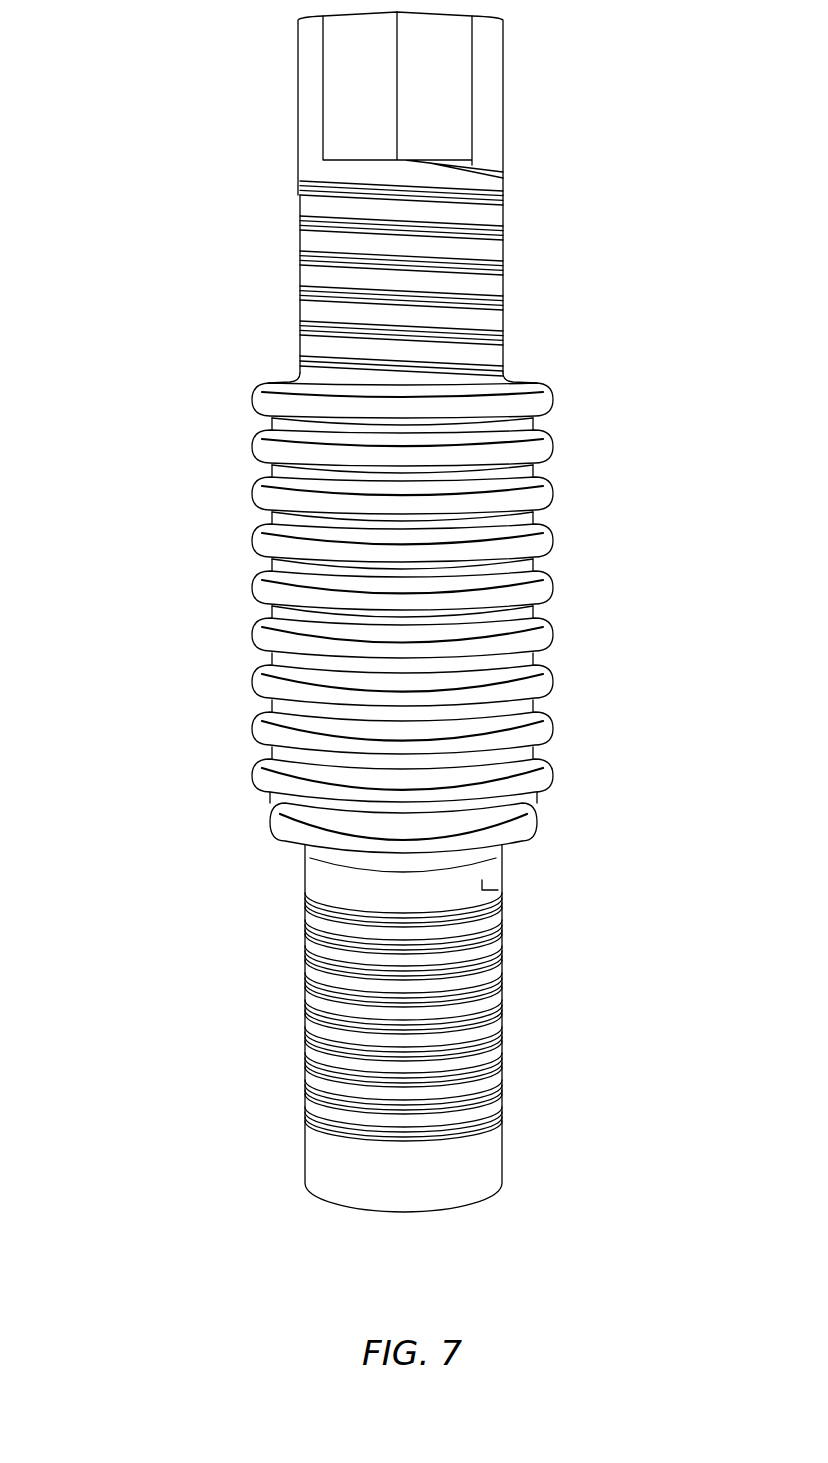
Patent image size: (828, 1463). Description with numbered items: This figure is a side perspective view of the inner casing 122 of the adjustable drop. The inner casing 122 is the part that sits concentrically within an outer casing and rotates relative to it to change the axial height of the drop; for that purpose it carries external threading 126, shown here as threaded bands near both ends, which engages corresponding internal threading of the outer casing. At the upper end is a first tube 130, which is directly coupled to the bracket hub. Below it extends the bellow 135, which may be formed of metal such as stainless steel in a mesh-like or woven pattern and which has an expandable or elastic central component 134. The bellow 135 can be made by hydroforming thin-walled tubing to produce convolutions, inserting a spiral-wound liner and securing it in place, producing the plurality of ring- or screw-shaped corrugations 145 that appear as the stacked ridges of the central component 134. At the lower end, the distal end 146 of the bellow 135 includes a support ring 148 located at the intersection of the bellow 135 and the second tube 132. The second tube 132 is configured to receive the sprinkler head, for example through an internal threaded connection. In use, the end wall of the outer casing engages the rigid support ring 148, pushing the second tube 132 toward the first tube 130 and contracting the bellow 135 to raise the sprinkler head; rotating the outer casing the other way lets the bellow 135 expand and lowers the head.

The inner casing 122 is at (371, 612).
The first tube 130 is at (495, 97).
The external threading 126 is at (500, 270).
The expandable/elastic central component 134 is at (410, 587).
The corrugations 145 is at (552, 447).
The bellow 135 is at (445, 555).
The distal end 146 is at (348, 822).
The support ring 148 is at (520, 830).
The second tube 132 is at (490, 1157).